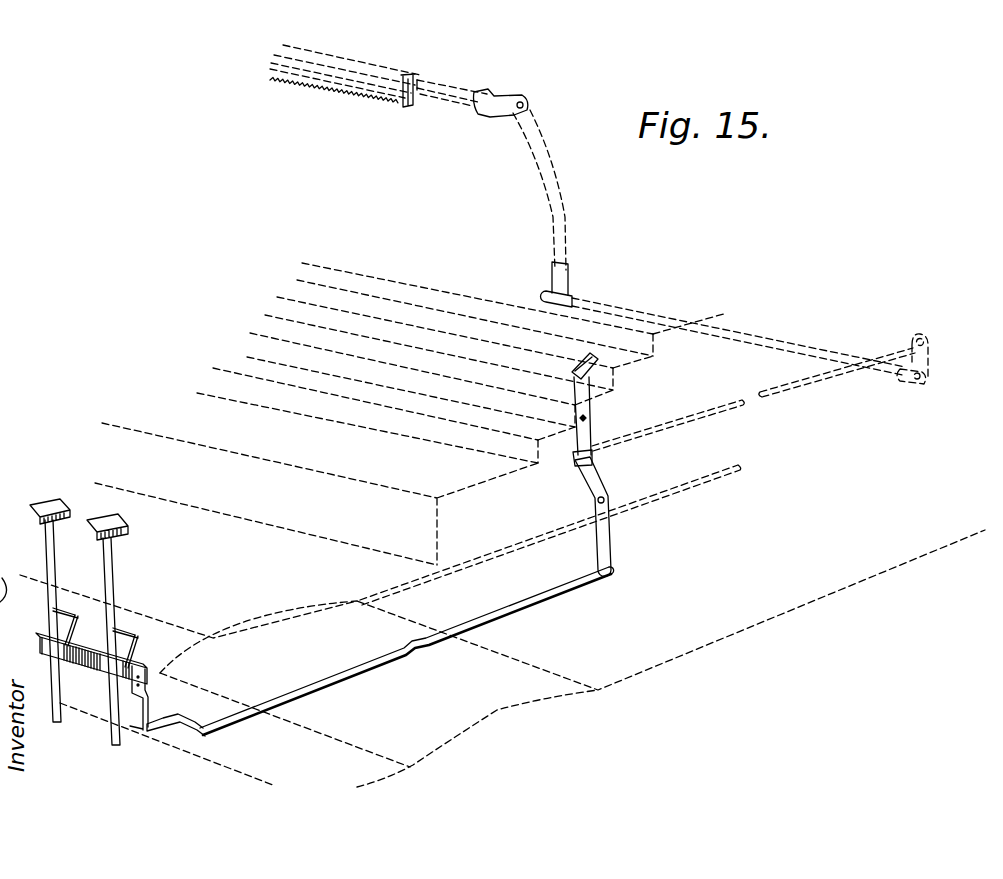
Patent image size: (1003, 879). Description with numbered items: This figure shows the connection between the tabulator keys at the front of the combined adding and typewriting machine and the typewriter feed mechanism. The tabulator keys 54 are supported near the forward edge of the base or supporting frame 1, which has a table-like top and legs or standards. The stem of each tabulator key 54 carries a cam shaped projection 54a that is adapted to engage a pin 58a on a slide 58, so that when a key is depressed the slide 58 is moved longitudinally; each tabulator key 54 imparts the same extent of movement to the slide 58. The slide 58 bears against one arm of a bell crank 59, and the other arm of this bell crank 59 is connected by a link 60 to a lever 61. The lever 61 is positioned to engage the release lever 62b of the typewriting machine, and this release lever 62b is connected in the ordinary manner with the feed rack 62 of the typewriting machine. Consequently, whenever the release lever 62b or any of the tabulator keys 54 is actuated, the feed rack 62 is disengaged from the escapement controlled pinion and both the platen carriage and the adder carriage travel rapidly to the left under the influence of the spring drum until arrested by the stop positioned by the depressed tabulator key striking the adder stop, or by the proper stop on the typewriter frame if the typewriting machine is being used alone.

The supporting frame 1 is at (740, 627).
The tabulator key 54 is at (107, 565).
The cam shaped projection 54a is at (137, 634).
The slide 58 is at (82, 665).
The pin 58a is at (98, 637).
The bell crank 59 is at (160, 733).
The link 60 is at (400, 653).
The lever 61 is at (608, 531).
The feed rack 62 is at (390, 103).
The release lever 62b is at (600, 376).